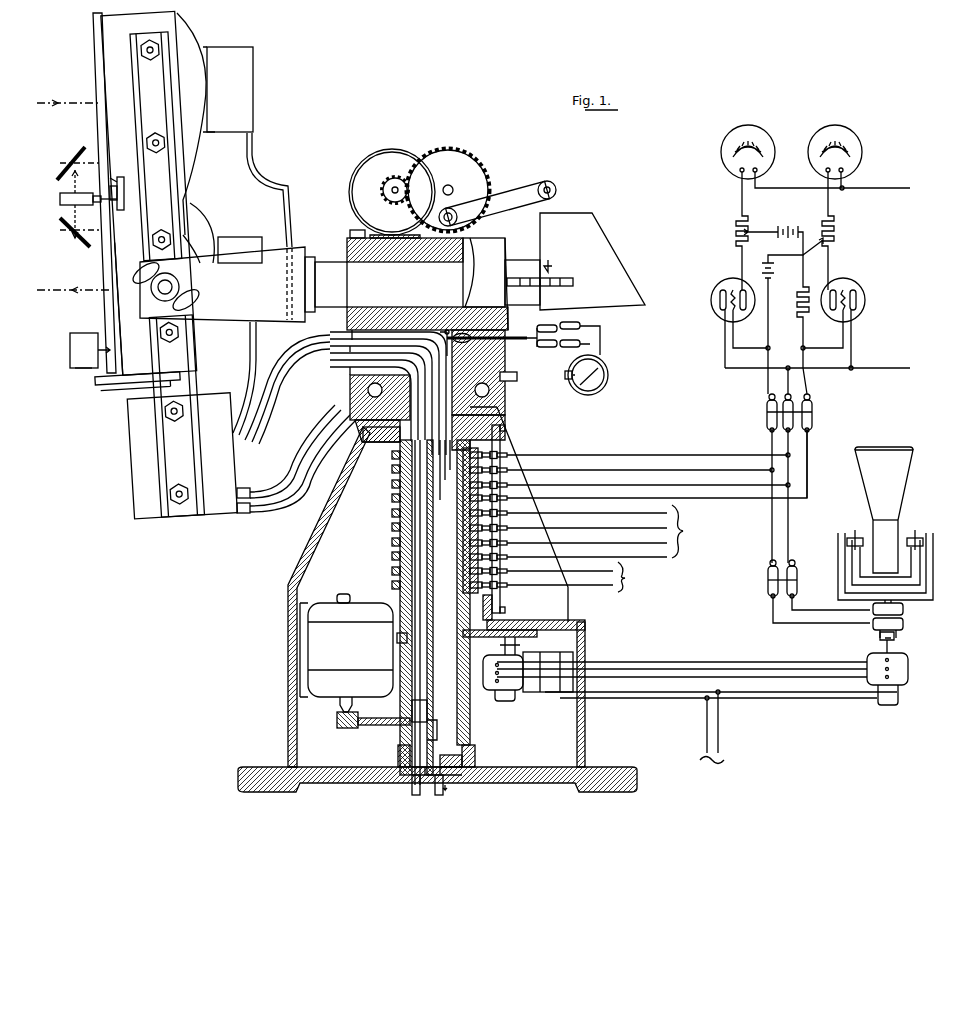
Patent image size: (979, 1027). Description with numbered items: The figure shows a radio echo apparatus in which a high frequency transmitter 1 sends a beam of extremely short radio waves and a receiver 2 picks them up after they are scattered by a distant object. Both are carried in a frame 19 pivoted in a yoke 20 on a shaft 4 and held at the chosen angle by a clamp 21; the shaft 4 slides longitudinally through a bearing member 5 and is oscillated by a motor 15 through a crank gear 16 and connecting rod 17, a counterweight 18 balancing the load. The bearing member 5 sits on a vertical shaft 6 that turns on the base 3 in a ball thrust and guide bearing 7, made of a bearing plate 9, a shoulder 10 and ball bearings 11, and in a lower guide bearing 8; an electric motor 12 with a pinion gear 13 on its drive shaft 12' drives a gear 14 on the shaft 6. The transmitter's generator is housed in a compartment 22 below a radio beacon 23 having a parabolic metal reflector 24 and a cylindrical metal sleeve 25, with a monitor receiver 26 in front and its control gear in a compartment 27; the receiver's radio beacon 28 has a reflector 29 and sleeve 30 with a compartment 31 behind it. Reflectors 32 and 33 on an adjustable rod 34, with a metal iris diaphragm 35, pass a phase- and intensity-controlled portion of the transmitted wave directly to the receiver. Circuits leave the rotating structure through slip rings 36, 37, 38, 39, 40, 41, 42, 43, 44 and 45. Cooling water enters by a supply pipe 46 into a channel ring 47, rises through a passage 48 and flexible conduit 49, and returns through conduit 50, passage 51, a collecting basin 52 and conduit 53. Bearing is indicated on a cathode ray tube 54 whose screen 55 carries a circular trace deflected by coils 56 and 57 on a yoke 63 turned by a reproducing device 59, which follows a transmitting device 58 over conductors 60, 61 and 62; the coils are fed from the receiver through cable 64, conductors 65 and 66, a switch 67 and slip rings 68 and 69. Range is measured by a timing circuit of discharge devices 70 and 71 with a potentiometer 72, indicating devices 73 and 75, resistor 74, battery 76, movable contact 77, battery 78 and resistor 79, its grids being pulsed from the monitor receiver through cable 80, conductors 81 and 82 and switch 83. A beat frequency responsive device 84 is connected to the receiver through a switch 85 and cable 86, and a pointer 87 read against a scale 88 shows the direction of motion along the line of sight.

The high frequency transmitter 1 is at (68, 281).
The receiver 2 is at (62, 93).
The base 3 is at (288, 655).
The shaft 4 is at (322, 262).
The bearing member 5 is at (347, 240).
The vertical shaft 6 is at (400, 700).
The ball thrust and guide bearing 7 is at (491, 392).
The guide bearing 8 is at (476, 753).
The bearing plate 9 is at (356, 428).
The shoulder 10 is at (368, 394).
The ball bearings 11 is at (500, 418).
The electric motor 12 is at (346, 640).
The drive shaft 12' is at (330, 708).
The pinion gear 13 is at (346, 728).
The gear 14 is at (376, 725).
The motor 15 is at (392, 152).
The crank gear 16 is at (448, 150).
The connecting rod 17 is at (515, 193).
The counterweight 18 is at (605, 252).
The frame 19 is at (160, 97).
The yoke 20 is at (270, 247).
The clamp 21 is at (195, 298).
The compartment 22 is at (128, 461).
The radio beacon 23 is at (106, 308).
The parabolic metal reflector 24 is at (204, 225).
The cylindrical metal sleeve 25 is at (124, 360).
The monitor receiver 26 is at (70, 356).
The compartment 27 is at (237, 240).
The radio beacon 28 is at (105, 122).
The parabolic metal reflector 29 is at (195, 42).
The cylindrical metal sleeve 30 is at (102, 44).
The compartment 31 is at (253, 86).
The metal reflector 32 is at (70, 236).
The metal reflector 33 is at (68, 164).
The adjustable rod 34 is at (119, 178).
The metal iris diaphragm 35 is at (60, 200).
The slip ring 36 is at (392, 457).
The slip ring 37 is at (392, 470).
The slip ring 38 is at (392, 485).
The slip ring 39 is at (392, 498).
The slip ring 40 is at (392, 513).
The slip ring 41 is at (392, 527).
The slip ring 42 is at (392, 543).
The slip ring 43 is at (392, 557).
The slip ring 44 is at (392, 571).
The slip ring 45 is at (392, 586).
The supply pipe 46 is at (410, 790).
The channel ring 47 is at (478, 771).
The passage 48 is at (428, 680).
The flexible conduit 49 is at (262, 512).
The flexible conduit 50 is at (262, 488).
The passage 51 is at (440, 720).
The collecting basin 52 is at (448, 755).
The conduit 53 is at (446, 792).
The cathode ray tube 54 is at (905, 486).
The screen 55 is at (881, 447).
The coil 56 is at (854, 538).
The coil 57 is at (916, 538).
The transmitting device 58 is at (486, 690).
The reproducing device 59 is at (908, 669).
The conductor 60 is at (668, 662).
The conductor 61 is at (703, 669).
The conductor 62 is at (738, 677).
The yoke 63 is at (935, 563).
The cable 64 is at (284, 183).
The conductor 65 is at (604, 455).
The conductor 66 is at (636, 470).
The switch 67 is at (768, 580).
The slip ring 68 is at (903, 607).
The slip ring 69 is at (903, 628).
The electron discharge device 70 is at (718, 290).
The electron discharge device 71 is at (858, 290).
The potentiometer 72 is at (736, 232).
The current indicating device 73 is at (748, 128).
The resistor 74 is at (836, 232).
The current indicating device 75 is at (835, 128).
The battery 76 is at (775, 272).
The movable contact 77 is at (755, 230).
The battery 78 is at (790, 228).
The resistor 79 is at (798, 308).
The cable 80 is at (258, 392).
The conductor 81 is at (680, 485).
The conductor 82 is at (700, 498).
The switch 83 is at (812, 410).
The beat frequency responsive device 84 is at (603, 365).
The switch 85 is at (595, 325).
The cable 86 is at (528, 337).
The pointer 87 is at (550, 262).
The scale 88 is at (578, 282).